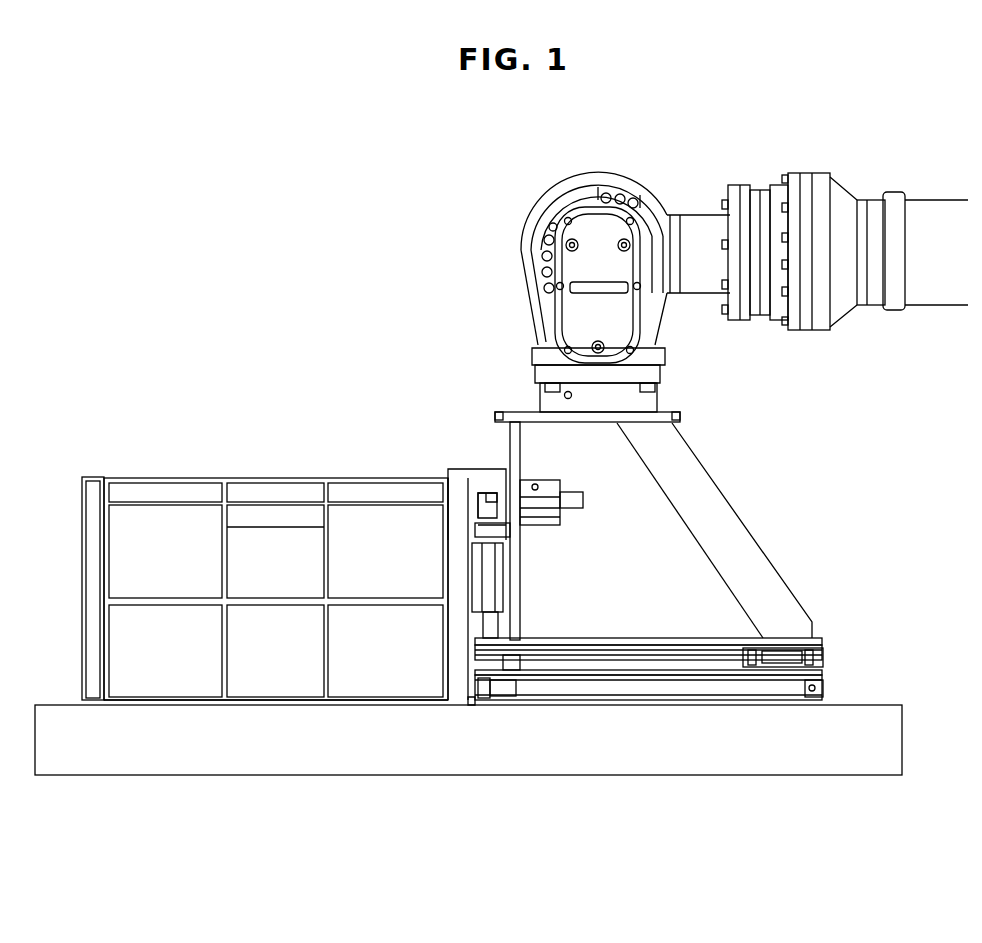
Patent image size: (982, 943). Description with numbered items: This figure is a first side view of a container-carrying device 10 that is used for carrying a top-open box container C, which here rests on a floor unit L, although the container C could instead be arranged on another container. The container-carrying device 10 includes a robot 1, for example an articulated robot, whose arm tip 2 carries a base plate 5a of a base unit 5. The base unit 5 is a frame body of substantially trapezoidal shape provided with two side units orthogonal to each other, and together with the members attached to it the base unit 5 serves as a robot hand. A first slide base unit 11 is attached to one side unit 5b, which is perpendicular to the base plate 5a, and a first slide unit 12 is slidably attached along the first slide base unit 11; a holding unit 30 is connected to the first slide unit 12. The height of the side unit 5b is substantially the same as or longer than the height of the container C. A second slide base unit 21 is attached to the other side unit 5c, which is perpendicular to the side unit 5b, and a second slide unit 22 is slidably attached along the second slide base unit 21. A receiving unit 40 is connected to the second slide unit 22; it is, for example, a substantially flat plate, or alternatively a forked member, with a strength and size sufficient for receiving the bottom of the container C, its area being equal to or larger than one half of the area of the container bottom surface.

The robot 1 is at (690, 230).
The container-carrying device 10 is at (939, 187).
The arm tip 2 is at (657, 395).
The base unit 5 is at (778, 488).
The base plate 5a is at (602, 424).
The side unit 5b is at (510, 435).
The side unit 5c is at (610, 638).
The first slide base unit 11 is at (507, 570).
The first slide unit 12 is at (505, 533).
The second slide base unit 21 is at (668, 638).
The second slide unit 22 is at (783, 668).
The holding unit 30 is at (458, 464).
The receiving unit 40 is at (472, 705).
The container C is at (128, 455).
The floor unit L is at (876, 705).